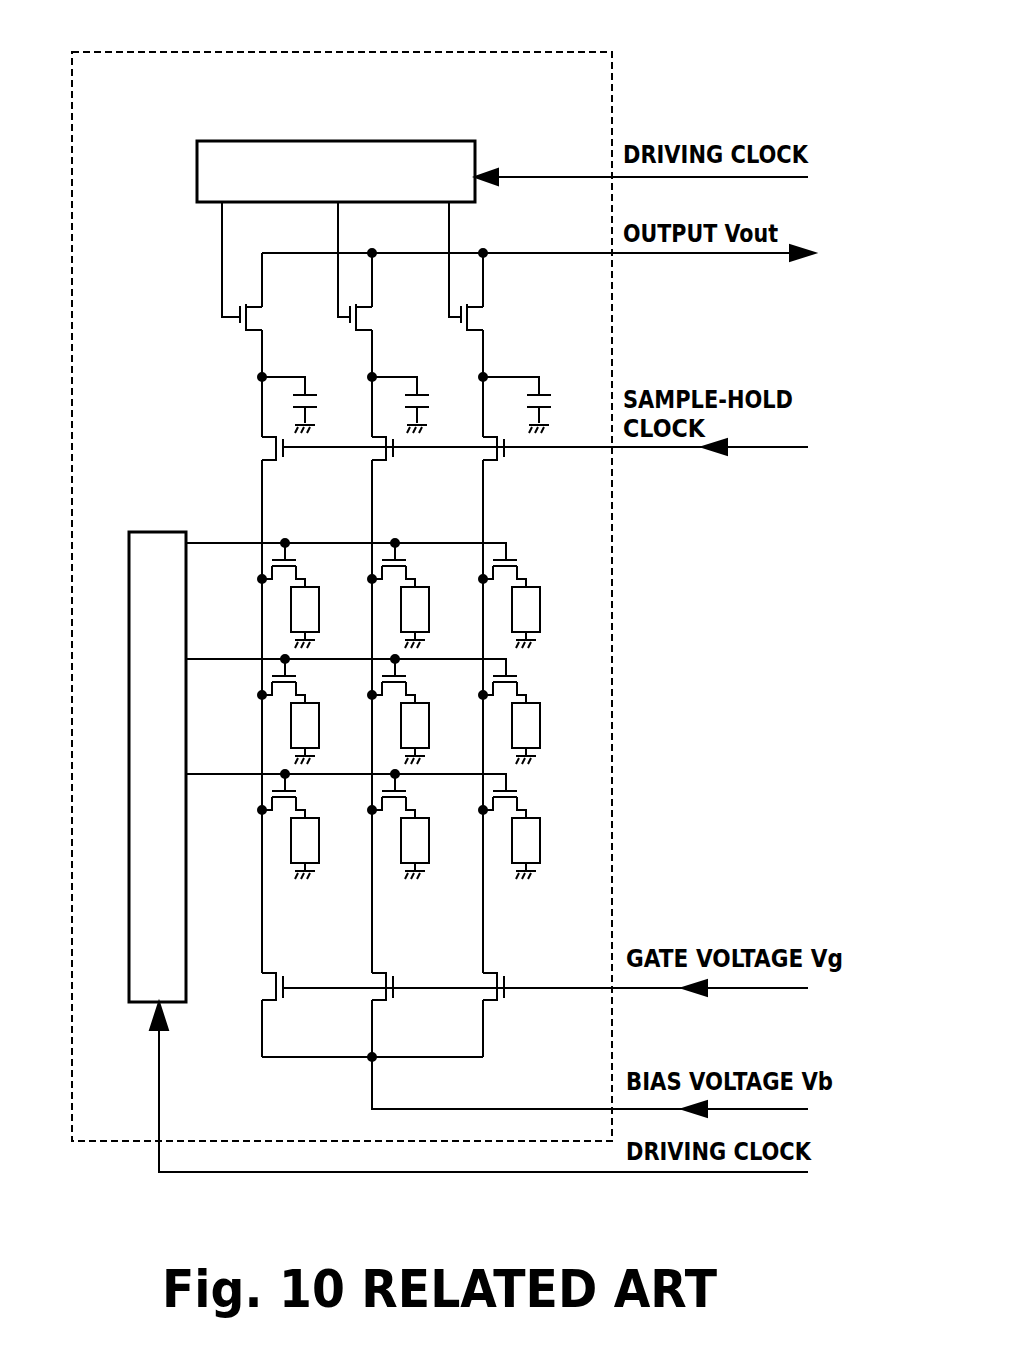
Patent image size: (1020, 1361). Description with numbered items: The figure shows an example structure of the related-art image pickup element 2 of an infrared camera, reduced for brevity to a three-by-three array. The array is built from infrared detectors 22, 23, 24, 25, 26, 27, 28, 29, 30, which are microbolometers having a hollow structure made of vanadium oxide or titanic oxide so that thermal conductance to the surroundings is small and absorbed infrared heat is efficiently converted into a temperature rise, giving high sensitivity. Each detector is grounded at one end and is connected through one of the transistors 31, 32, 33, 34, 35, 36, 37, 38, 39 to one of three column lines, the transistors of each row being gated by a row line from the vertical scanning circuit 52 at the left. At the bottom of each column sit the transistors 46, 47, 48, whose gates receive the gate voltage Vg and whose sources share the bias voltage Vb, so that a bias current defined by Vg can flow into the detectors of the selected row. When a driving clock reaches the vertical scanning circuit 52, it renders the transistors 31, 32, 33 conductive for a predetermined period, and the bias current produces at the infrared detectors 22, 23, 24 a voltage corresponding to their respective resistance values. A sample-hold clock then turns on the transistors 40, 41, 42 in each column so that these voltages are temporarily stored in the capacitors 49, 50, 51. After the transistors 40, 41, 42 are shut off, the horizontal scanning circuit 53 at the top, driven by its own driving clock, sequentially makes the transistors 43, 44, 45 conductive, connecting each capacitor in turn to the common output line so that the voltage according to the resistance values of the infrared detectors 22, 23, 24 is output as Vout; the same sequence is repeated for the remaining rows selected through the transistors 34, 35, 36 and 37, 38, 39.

The image pickup element 2 is at (505, 50).
The horizontal scanning circuit 53 is at (468, 140).
The vertical scanning circuit 52 is at (160, 532).
The infrared detector 22 is at (316, 854).
The infrared detector 23 is at (426, 854).
The infrared detector 24 is at (537, 854).
The infrared detector 25 is at (316, 739).
The infrared detector 26 is at (426, 739).
The infrared detector 27 is at (537, 739).
The infrared detector 28 is at (316, 623).
The infrared detector 29 is at (426, 623).
The infrared detector 30 is at (537, 623).
The transistor 31 is at (300, 802).
The transistor 32 is at (410, 802).
The transistor 33 is at (521, 802).
The transistor 34 is at (300, 687).
The transistor 35 is at (410, 687).
The transistor 36 is at (521, 687).
The transistor 37 is at (300, 571).
The transistor 38 is at (410, 571).
The transistor 39 is at (521, 571).
The transistor 40 is at (287, 462).
The transistor 41 is at (397, 462).
The transistor 42 is at (508, 462).
The transistor 43 is at (266, 318).
The transistor 44 is at (376, 318).
The transistor 45 is at (487, 318).
The transistor 46 is at (287, 985).
The transistor 47 is at (397, 985).
The transistor 48 is at (508, 985).
The capacitor 49 is at (309, 392).
The capacitor 50 is at (421, 392).
The capacitor 51 is at (543, 392).